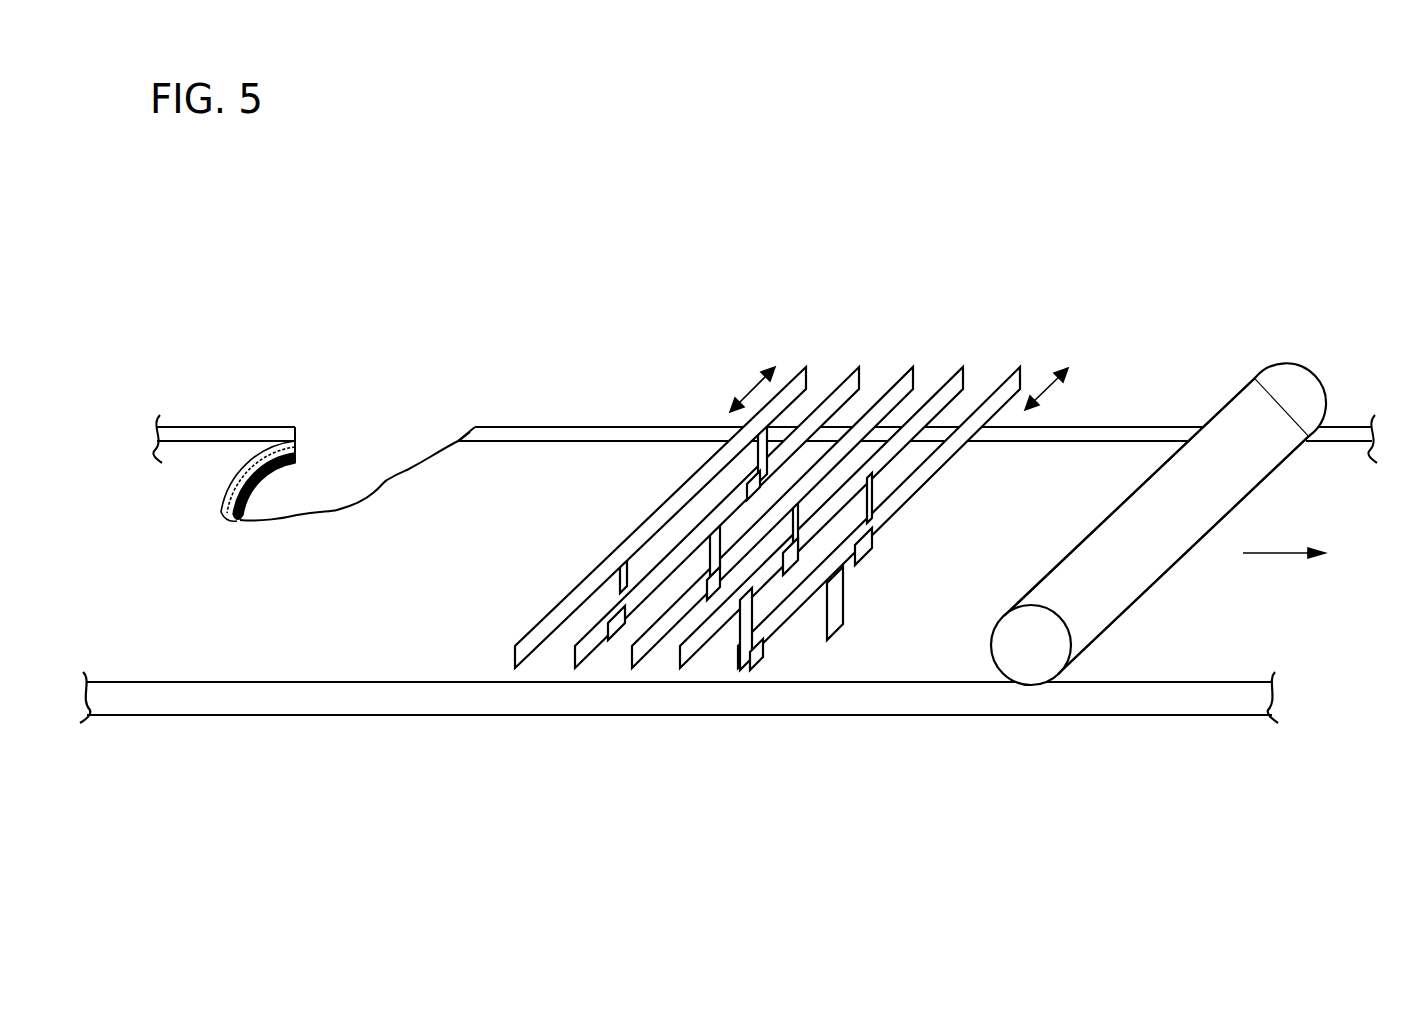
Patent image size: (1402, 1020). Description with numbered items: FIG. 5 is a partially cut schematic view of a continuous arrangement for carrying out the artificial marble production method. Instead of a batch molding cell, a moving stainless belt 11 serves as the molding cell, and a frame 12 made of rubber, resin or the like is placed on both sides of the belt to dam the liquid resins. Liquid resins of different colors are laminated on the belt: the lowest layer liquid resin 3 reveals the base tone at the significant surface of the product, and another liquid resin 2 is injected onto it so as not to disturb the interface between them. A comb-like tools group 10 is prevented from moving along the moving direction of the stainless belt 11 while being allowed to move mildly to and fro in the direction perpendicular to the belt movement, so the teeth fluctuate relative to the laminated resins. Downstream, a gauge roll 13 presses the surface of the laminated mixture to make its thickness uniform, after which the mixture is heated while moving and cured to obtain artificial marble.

The liquid resin 2 is at (228, 487).
The lowest layer liquid resin 3 is at (271, 449).
The comb-like tools group 10 is at (1025, 346).
The stainless belt 11 is at (297, 455).
The frame 12 is at (548, 430).
The gauge roll 13 is at (1226, 418).